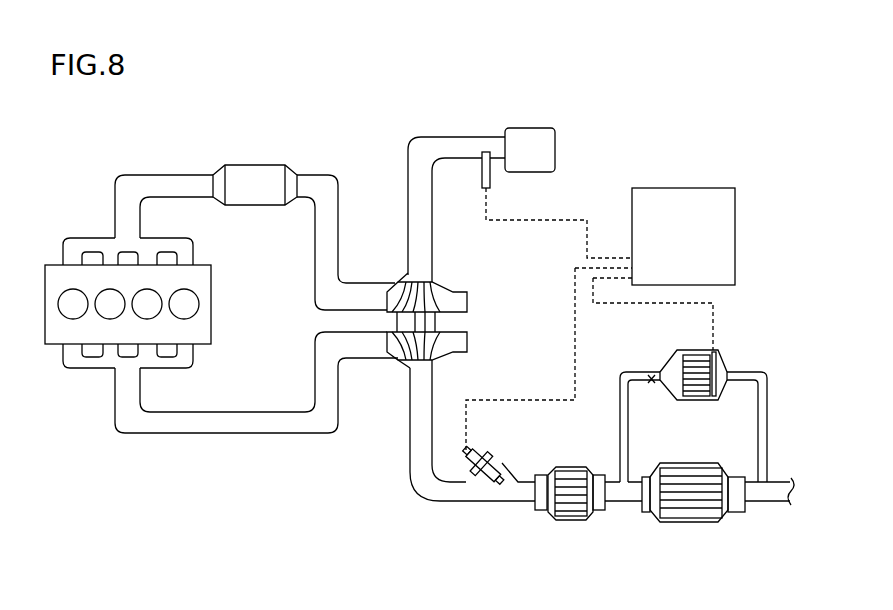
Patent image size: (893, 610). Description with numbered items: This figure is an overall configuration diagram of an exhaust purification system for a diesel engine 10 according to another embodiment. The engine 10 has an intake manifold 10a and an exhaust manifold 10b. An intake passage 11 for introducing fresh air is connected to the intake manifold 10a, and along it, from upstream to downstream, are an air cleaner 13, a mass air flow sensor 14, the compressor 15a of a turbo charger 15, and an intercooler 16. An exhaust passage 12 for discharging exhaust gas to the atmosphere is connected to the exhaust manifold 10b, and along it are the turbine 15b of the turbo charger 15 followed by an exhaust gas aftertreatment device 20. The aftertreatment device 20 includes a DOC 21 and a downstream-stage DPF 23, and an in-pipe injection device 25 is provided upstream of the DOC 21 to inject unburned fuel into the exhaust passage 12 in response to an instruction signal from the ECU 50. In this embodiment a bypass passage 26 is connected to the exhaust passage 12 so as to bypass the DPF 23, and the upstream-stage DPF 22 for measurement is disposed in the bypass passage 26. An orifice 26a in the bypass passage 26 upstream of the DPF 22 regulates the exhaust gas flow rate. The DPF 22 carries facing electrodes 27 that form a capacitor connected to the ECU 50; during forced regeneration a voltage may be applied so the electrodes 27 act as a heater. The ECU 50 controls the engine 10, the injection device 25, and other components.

The engine 10 is at (226, 314).
The intake manifold 10a is at (96, 240).
The exhaust manifold 10b is at (89, 370).
The intake passage 11 is at (165, 175).
The exhaust passage 12 is at (290, 434).
The air cleaner 13 is at (540, 160).
The mass air flow (MAF) sensor 14 is at (482, 172).
The turbo charger 15 is at (473, 320).
The compressor 15a is at (449, 292).
The turbine 15b is at (444, 353).
The intercooler 16 is at (266, 195).
The exhaust gas aftertreatment device 20 is at (646, 530).
The DOC 21 is at (567, 467).
The upstream-stage DPF for measurement 22 is at (690, 350).
The downstream-stage DPF 23 is at (681, 466).
The in-pipe injection device 25 is at (478, 452).
The bypass passage 26 is at (620, 384).
The orifice 26a is at (650, 376).
The electrodes 27 is at (718, 358).
The ECU 50 is at (695, 267).